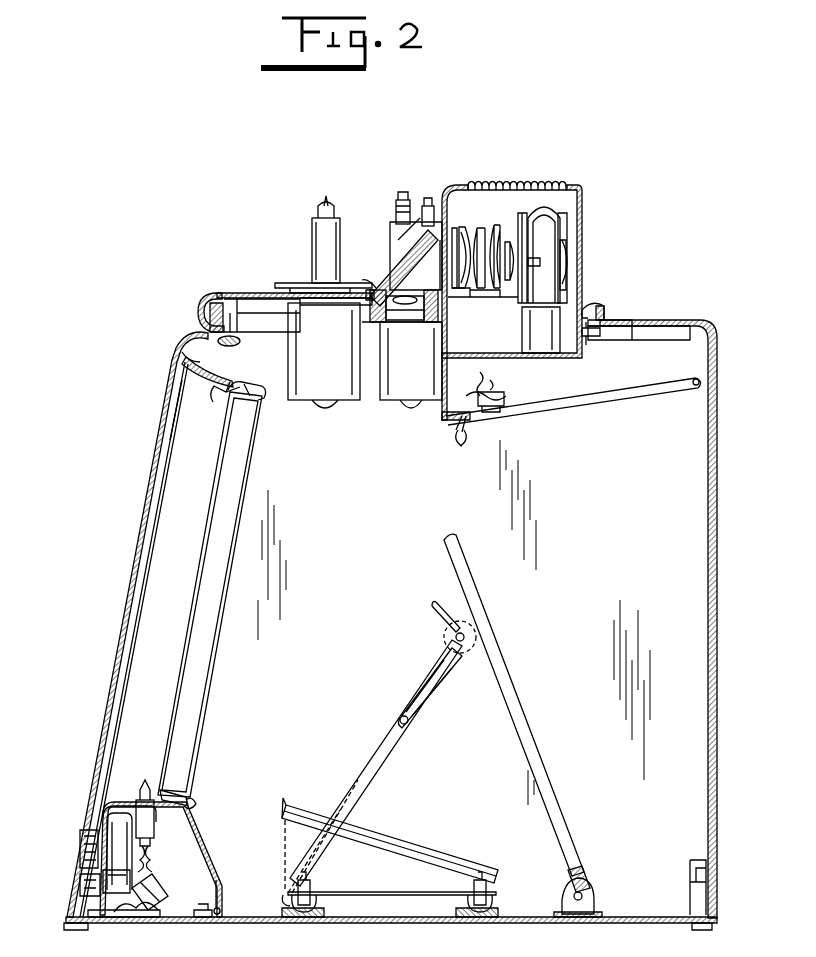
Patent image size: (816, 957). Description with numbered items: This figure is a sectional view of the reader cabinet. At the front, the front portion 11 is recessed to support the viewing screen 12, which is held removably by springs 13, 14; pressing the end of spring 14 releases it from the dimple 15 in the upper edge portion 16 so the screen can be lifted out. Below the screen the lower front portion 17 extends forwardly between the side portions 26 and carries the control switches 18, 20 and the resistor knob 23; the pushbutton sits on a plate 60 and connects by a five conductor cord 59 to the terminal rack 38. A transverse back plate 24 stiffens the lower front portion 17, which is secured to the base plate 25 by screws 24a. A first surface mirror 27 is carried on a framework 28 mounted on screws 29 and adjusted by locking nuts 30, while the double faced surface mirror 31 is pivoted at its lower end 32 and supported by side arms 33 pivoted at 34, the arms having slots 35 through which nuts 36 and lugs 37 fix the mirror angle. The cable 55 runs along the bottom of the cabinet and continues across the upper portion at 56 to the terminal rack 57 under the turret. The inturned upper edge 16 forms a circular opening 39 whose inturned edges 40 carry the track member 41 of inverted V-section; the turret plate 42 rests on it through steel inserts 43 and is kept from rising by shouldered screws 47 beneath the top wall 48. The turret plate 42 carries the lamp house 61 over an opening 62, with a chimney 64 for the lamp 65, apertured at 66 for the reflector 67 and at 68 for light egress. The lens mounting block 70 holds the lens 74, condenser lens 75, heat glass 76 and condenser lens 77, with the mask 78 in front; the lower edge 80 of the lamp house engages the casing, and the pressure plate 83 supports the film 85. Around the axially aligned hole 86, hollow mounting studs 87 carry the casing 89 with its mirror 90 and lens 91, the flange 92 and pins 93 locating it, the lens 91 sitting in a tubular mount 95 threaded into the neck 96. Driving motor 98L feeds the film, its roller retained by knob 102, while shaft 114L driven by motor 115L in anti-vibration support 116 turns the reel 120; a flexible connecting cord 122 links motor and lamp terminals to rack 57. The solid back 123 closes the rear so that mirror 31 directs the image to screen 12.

The front portion 11 is at (142, 529).
The viewing screen 12 is at (232, 487).
The spring 13 is at (160, 790).
The spring 14 is at (213, 386).
The dimple 15 is at (246, 390).
The upper edge portion 16 is at (244, 380).
The lower front portion 17 is at (108, 816).
The control switch 18 is at (146, 790).
The control switch 20 is at (80, 884).
The resistor knob 23 is at (82, 832).
The transverse back plate 24 is at (198, 824).
The screw 24a is at (196, 906).
The base plate 25 is at (282, 895).
The side portion 26 is at (94, 726).
The first surface mirror 27 is at (400, 846).
The framework 28 is at (406, 858).
The screw 29 is at (322, 907).
The locking nut 30 is at (316, 895).
The double faced surface mirror 31 is at (510, 690).
The lower end 32 is at (586, 882).
The side arm 33 is at (394, 770).
The pivot 34 is at (288, 896).
The slot 35 is at (424, 706).
The nut 36 is at (438, 608).
The lug 37 is at (466, 656).
The terminal rack 38 is at (144, 886).
The circular opening 39 is at (264, 334).
The inturned edge 40 is at (196, 332).
The track member 41 is at (204, 316).
The turret plate 42 is at (238, 294).
The steel insert 43 is at (228, 296).
The shouldered screw 47 is at (222, 346).
The top wall 48 is at (658, 322).
The cable 55 is at (88, 924).
The cable upper portion 56 is at (652, 382).
The terminal rack 57 is at (506, 394).
The five conductor cord 59 is at (150, 850).
The plate 60 is at (118, 800).
The lamp house 61 is at (578, 192).
The opening 62 is at (592, 330).
The chimney 64 is at (562, 240).
The lamp 65 is at (548, 206).
The aperture 66 is at (566, 260).
The reflector 67 is at (568, 282).
The aperture 68 is at (540, 262).
The lens mounting block 70 is at (464, 290).
The lens 74 is at (522, 248).
The condenser lens 75 is at (500, 242).
The heat glass 76 is at (482, 296).
The condenser lens 77 is at (481, 234).
The mask 78 is at (460, 232).
The lower edge 80 is at (448, 244).
The pressure plate 83 is at (404, 238).
The film 85 is at (398, 236).
The axially aligned hole 86 is at (387, 321).
The hollow mounting stud 87 is at (376, 324).
The casing 89 is at (385, 276).
The mirror 90 is at (384, 272).
The lens 91 is at (414, 290).
The flange 92 is at (374, 300).
The pin 93 is at (404, 268).
The tubular mount 95 is at (404, 322).
The neck 96 is at (428, 322).
The driving motor 98L is at (411, 365).
The knob 102 is at (430, 208).
The shaft 114L is at (324, 214).
The driving motor 115L is at (324, 355).
The anti-vibration support 116 is at (298, 300).
The reel 120 is at (312, 244).
The flexible connecting cord 122 is at (492, 378).
The back 123 is at (712, 480).